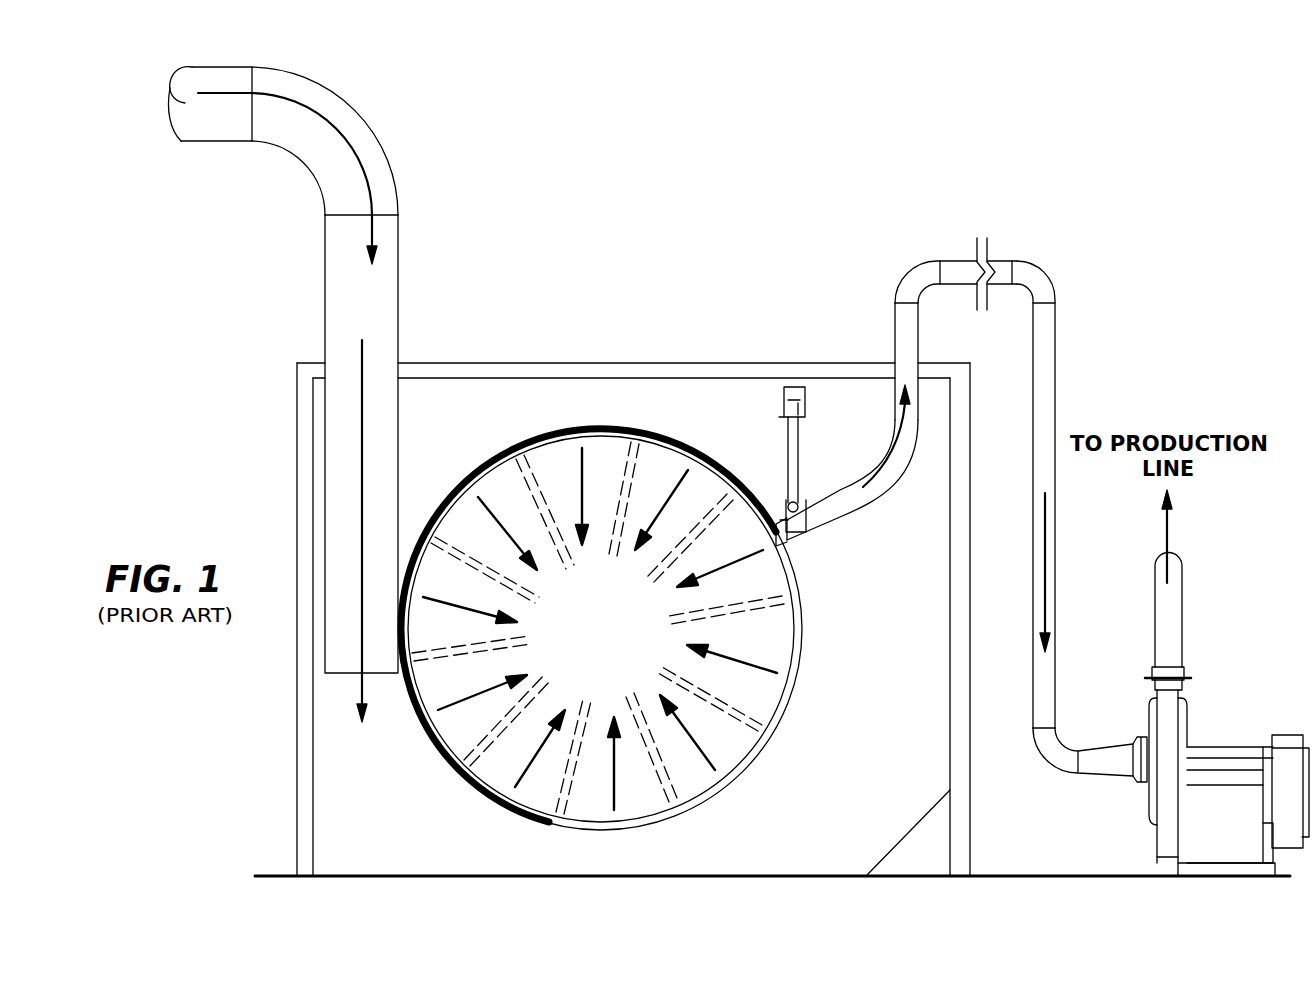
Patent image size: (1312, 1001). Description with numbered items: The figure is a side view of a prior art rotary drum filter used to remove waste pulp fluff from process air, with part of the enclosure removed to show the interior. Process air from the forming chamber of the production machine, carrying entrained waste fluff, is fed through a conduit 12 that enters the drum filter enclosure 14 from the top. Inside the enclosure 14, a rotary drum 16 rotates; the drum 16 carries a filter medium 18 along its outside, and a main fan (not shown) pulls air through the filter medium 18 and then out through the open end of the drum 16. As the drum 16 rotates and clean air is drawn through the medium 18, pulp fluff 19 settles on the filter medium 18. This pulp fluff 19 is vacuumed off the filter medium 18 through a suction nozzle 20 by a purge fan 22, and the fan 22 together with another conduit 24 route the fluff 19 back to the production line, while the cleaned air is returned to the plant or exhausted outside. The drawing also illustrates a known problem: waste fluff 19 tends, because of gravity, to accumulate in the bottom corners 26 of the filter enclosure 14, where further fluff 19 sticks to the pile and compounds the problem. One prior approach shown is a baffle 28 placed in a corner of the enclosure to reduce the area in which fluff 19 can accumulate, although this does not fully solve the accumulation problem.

The conduit 12 is at (410, 265).
The drum filter enclosure 14 is at (346, 793).
The rotary drum 16 is at (614, 848).
The filter medium 18 is at (592, 428).
The pulp fluff 19 is at (648, 428).
The suction nozzle 20 is at (808, 522).
The purge fan 22 is at (1227, 847).
The conduit 24 is at (1183, 635).
The bottom corners 26 is at (332, 863).
The baffle 28 is at (887, 860).